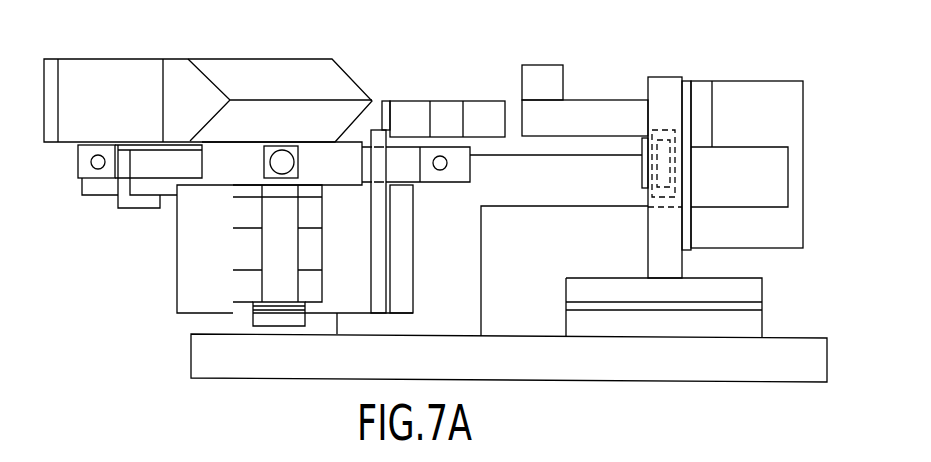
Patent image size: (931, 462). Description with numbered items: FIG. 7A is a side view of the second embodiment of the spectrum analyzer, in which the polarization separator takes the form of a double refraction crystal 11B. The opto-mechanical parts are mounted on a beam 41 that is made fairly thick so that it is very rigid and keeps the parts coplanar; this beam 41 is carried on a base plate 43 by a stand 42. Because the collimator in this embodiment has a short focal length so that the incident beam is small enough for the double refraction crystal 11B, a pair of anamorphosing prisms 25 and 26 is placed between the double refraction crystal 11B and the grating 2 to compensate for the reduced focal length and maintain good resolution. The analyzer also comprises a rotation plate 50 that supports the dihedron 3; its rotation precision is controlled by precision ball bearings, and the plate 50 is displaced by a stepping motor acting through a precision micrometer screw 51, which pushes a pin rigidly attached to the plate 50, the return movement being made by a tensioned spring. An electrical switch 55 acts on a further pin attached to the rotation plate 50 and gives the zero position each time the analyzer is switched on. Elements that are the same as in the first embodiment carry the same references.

The grating 2 is at (96, 68).
The dihedron 3 is at (297, 72).
The anamorphosing prism 26 is at (413, 100).
The anamorphosing prism 25 is at (452, 100).
The double refraction crystal 11B is at (595, 112).
The beam 41 is at (747, 146).
The electrical switch 55 is at (95, 192).
The rotation plate 50 is at (222, 173).
The micrometer screw 51 is at (435, 177).
The stand 42 is at (462, 290).
The base plate 43 is at (685, 367).